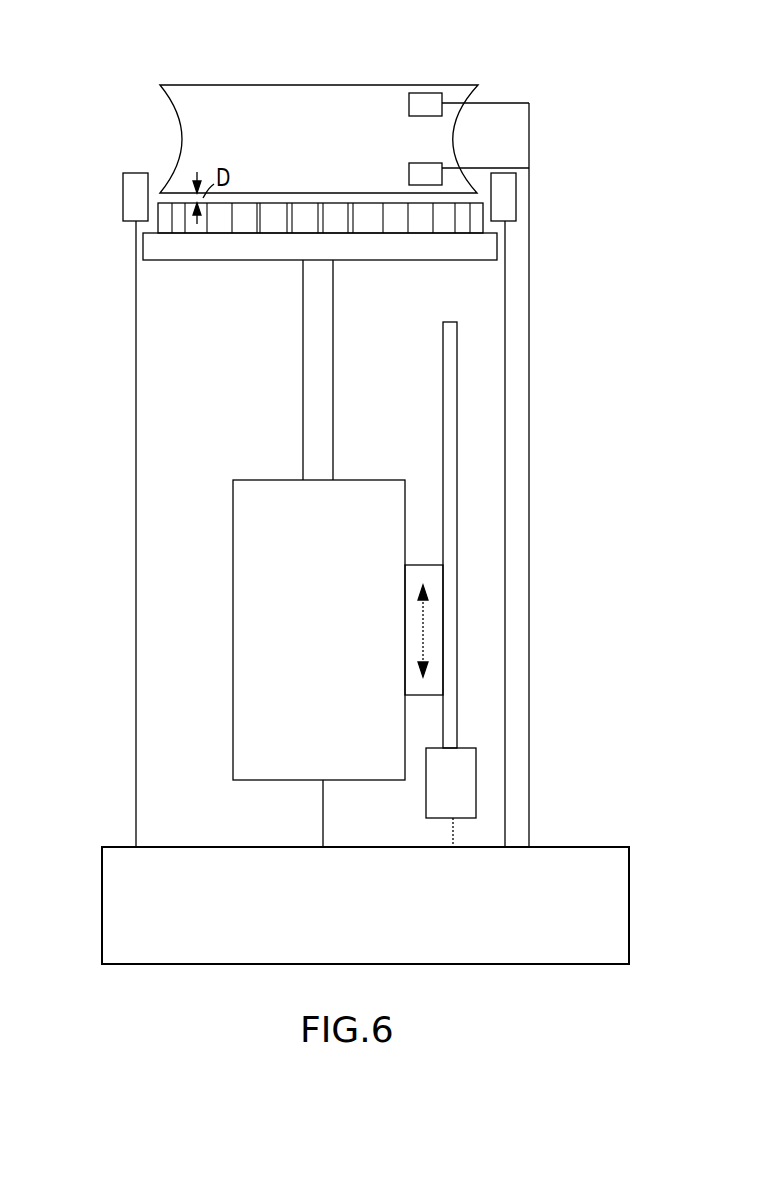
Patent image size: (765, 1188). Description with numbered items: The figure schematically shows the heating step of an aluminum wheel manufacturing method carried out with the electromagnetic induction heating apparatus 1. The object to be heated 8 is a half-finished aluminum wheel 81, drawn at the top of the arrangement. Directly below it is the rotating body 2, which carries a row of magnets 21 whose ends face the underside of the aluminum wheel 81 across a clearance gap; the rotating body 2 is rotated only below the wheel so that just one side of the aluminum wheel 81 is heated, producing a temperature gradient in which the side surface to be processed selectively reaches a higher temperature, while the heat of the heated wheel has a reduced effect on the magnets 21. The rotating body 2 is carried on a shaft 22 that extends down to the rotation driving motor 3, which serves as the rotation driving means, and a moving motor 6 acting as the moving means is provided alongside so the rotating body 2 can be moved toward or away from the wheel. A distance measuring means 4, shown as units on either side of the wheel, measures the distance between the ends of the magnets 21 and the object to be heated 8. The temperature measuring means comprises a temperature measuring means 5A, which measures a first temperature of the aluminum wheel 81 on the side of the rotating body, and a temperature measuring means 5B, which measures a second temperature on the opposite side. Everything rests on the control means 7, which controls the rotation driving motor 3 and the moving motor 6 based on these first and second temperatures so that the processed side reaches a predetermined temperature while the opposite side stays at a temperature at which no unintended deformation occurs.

The electromagnetic induction heating apparatus 1 is at (566, 328).
The rotating body 2 is at (320, 341).
The magnet 21 is at (305, 220).
The shaft 22 is at (303, 362).
The rotation driving motor 3 is at (233, 612).
The distance measuring means 4 is at (123, 195).
The temperature measuring means 5A is at (422, 160).
The temperature measuring means 5B is at (425, 92).
The moving motor 6 is at (426, 790).
The control means 7 is at (102, 903).
The object to be heated 8 is at (319, 107).
The half-finished aluminum wheel 81 is at (230, 85).